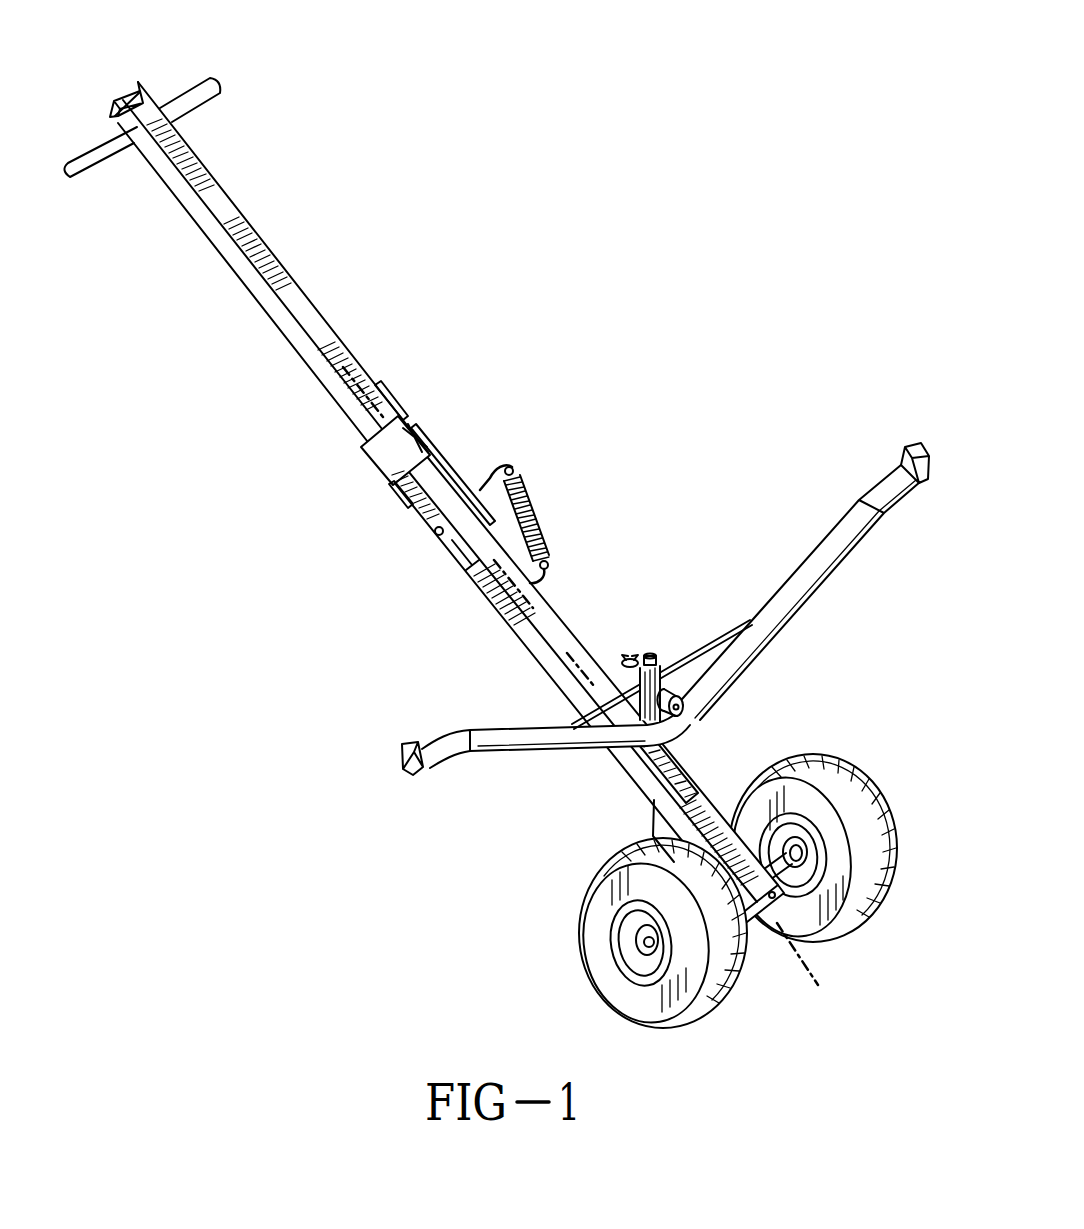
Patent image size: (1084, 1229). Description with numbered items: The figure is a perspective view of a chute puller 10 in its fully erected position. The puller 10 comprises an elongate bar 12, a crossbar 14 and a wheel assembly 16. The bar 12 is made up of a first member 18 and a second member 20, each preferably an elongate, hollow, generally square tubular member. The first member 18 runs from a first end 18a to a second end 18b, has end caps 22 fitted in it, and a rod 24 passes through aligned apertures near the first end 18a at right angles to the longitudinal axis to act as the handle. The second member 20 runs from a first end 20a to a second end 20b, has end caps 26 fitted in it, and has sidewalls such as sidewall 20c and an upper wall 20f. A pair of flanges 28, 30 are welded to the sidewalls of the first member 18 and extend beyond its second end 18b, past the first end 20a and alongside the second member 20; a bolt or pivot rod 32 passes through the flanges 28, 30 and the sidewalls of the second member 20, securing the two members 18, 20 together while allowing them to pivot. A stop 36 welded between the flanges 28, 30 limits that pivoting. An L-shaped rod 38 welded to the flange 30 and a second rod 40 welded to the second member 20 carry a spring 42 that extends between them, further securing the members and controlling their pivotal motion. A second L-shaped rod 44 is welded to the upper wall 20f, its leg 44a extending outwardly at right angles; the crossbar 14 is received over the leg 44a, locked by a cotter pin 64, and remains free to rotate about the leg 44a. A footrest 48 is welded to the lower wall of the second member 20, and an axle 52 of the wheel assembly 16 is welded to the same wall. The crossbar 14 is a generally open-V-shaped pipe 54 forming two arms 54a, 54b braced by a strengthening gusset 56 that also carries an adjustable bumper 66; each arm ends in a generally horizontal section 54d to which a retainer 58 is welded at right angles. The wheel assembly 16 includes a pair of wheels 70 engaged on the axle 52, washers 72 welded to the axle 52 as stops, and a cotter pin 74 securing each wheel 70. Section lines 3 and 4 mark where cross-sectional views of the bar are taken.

The chute puller 10 is at (700, 290).
The elongate bar 12 is at (300, 378).
The crossbar 14 is at (725, 700).
The wheel assembly 16 is at (585, 965).
The first member 18 is at (222, 205).
The first end 18a is at (150, 88).
The second end 18b is at (414, 417).
The second member 20 is at (522, 634).
The first end 20a is at (441, 454).
The second end 20b is at (750, 830).
The sidewall 20c is at (548, 654).
The upper wall 20f is at (463, 565).
The end caps 22 is at (128, 94).
The rod 24 is at (191, 82).
The end caps 26 is at (424, 440).
The flange 28 is at (374, 440).
The flange 30 is at (397, 408).
The bolt or pivot rod 32 is at (434, 534).
The stop 36 is at (400, 492).
The L-shaped rod 38 is at (512, 467).
The second rod 40 is at (538, 574).
The spring 42 is at (520, 493).
The second L-shaped rod 44 is at (658, 775).
The leg 44a is at (650, 662).
The footrest 48 is at (648, 827).
The axle 52 is at (786, 870).
The pipe 54 is at (800, 607).
The arm 54a is at (540, 748).
The arm 54b is at (816, 552).
The horizontal section 54d is at (905, 470).
The strengthening gusset 56 is at (700, 672).
The retainer 58 is at (926, 452).
The cotter pin 64 is at (630, 660).
The bumper 66 is at (680, 718).
The wheels 70 is at (866, 795).
The washers 72 is at (796, 848).
The cotter pin 74 is at (617, 937).
The section line 3- 3 is at (343, 367).
The section line 4- 4 is at (561, 637).